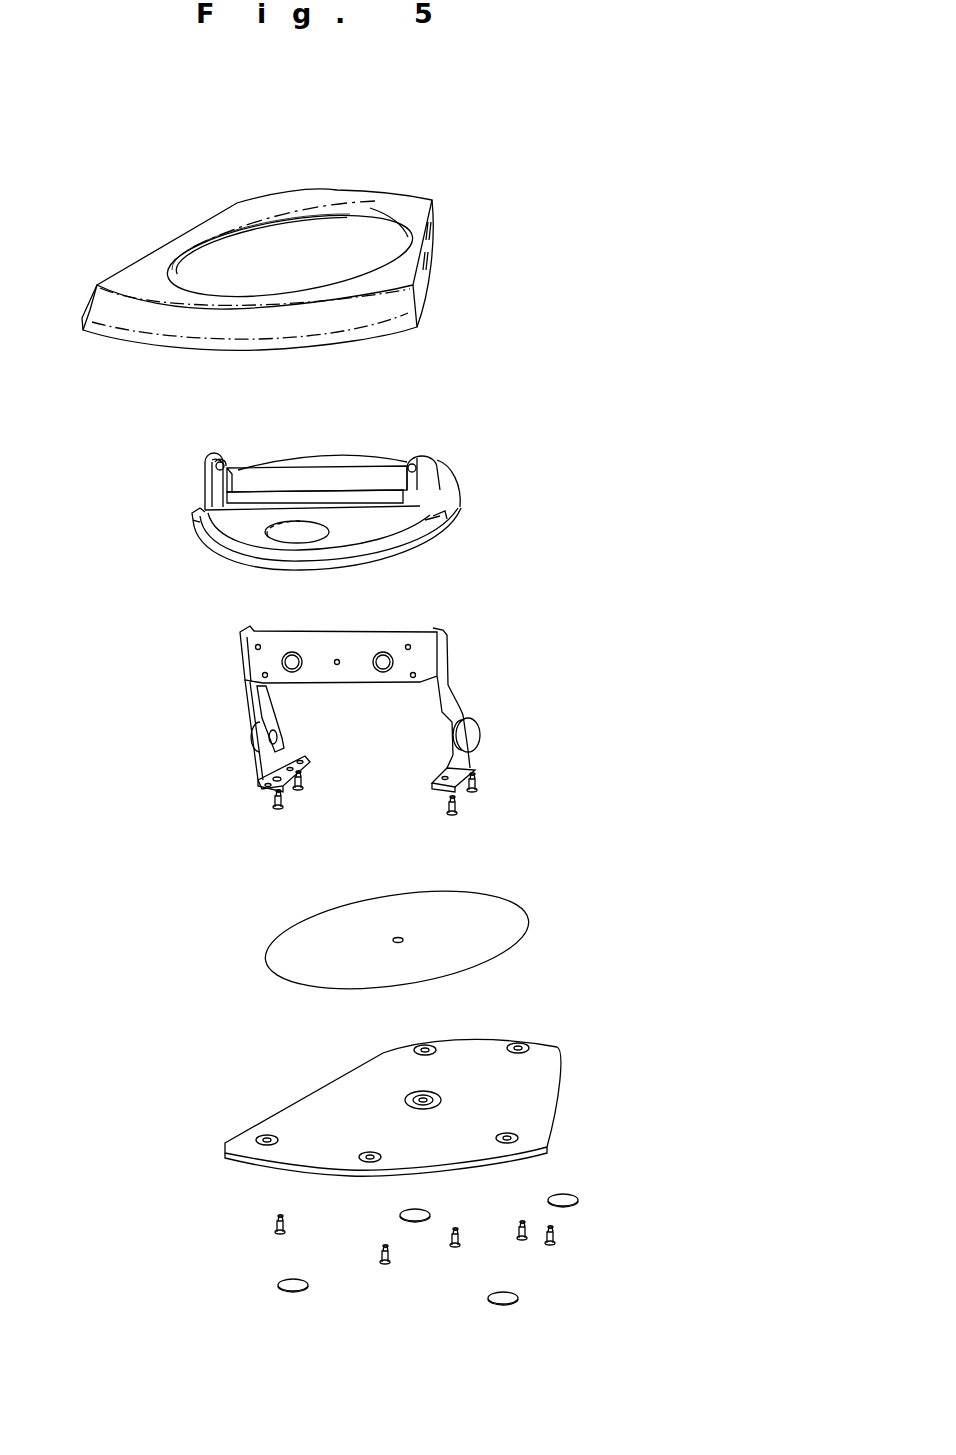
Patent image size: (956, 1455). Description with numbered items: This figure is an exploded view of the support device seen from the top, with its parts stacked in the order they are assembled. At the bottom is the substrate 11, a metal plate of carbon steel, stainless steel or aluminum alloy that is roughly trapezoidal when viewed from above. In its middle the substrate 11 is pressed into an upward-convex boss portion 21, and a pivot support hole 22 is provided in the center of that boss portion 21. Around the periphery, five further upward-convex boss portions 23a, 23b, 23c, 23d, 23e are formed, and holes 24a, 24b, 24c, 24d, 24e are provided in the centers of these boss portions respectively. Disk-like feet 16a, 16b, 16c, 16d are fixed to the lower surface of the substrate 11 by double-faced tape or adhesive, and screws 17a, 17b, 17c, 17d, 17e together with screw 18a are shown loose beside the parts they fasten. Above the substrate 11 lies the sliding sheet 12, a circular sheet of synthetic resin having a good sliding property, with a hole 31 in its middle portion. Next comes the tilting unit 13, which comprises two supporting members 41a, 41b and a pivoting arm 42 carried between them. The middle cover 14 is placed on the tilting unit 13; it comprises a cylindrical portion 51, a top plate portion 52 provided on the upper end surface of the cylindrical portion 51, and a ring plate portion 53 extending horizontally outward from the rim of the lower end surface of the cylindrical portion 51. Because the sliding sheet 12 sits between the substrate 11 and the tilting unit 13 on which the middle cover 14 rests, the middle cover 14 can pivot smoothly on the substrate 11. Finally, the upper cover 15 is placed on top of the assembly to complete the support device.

The upper cover 15 is at (438, 242).
The middle cover 14 is at (345, 528).
The cylindrical portion 51 is at (411, 525).
The top plate portion 52 is at (342, 528).
The ring plate portion 53 is at (205, 556).
The tilting unit 13 is at (356, 734).
The pivoting arm 42 is at (365, 650).
The supporting member 41a is at (478, 748).
The supporting member 41b is at (258, 773).
The screw 18a is at (448, 822).
The sliding sheet 12 is at (422, 934).
The hole 31 is at (395, 938).
The substrate 11 is at (391, 1098).
The boss portion 21 is at (410, 1100).
The pivot support hole 22 is at (420, 1098).
The boss portion 23a is at (262, 1143).
The boss portion 23b is at (367, 1158).
The boss portion 23c is at (542, 1148).
The boss portion 23d is at (525, 1047).
The boss portion 23e is at (428, 1047).
The hole 24a is at (265, 1140).
The hole 24b is at (368, 1155).
The hole 24c is at (507, 1136).
The hole 24d is at (518, 1045).
The hole 24e is at (422, 1048).
The foot 16a is at (290, 1298).
The foot 16b is at (505, 1312).
The foot 16c is at (578, 1200).
The foot 16d is at (430, 1212).
The screw 17a is at (277, 1234).
The screw 17b is at (385, 1268).
The screw 17c is at (523, 1243).
The screw 17d is at (556, 1243).
The screw 17e is at (455, 1250).